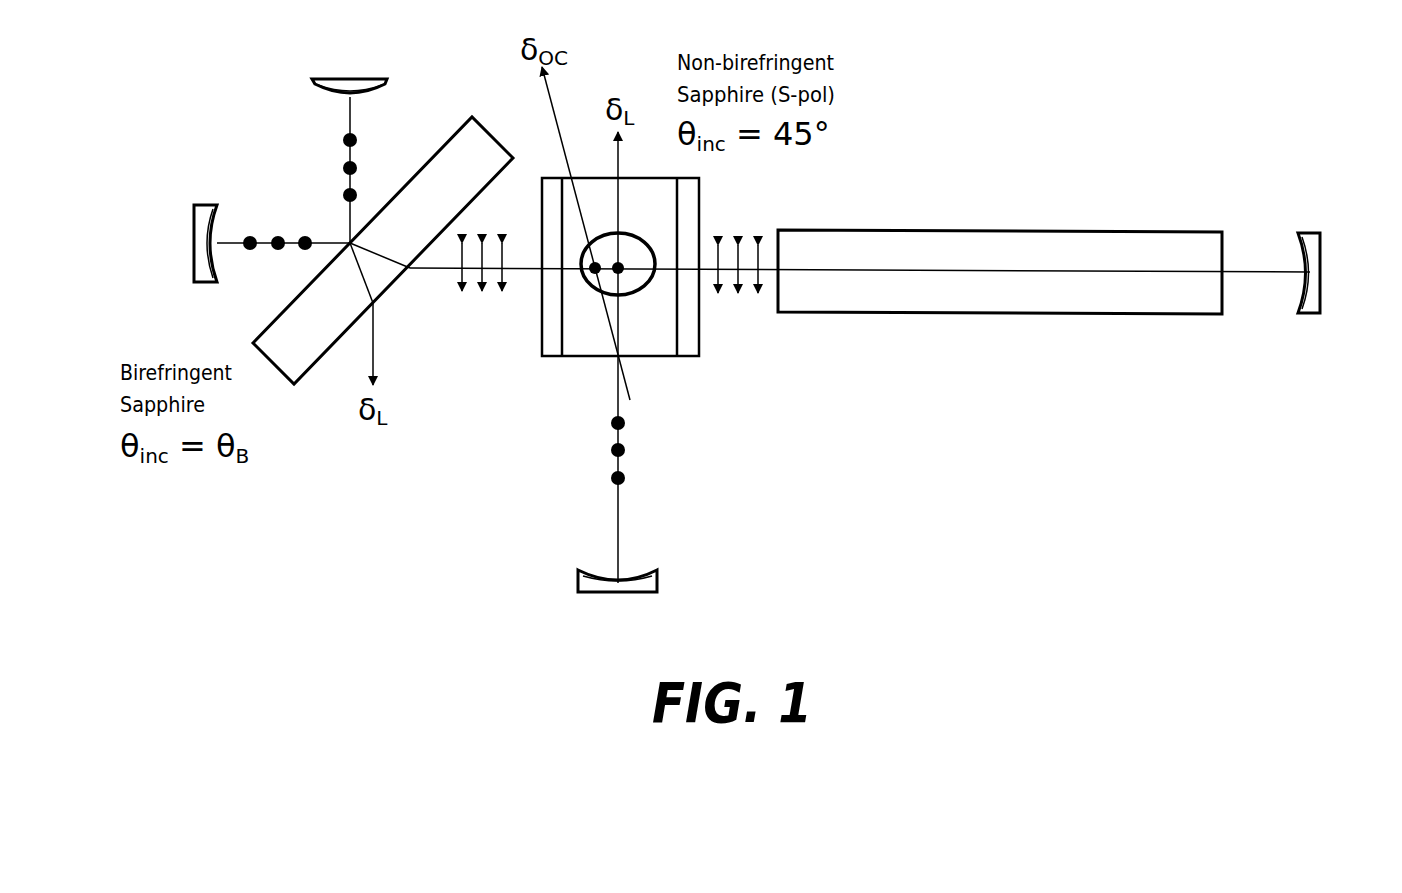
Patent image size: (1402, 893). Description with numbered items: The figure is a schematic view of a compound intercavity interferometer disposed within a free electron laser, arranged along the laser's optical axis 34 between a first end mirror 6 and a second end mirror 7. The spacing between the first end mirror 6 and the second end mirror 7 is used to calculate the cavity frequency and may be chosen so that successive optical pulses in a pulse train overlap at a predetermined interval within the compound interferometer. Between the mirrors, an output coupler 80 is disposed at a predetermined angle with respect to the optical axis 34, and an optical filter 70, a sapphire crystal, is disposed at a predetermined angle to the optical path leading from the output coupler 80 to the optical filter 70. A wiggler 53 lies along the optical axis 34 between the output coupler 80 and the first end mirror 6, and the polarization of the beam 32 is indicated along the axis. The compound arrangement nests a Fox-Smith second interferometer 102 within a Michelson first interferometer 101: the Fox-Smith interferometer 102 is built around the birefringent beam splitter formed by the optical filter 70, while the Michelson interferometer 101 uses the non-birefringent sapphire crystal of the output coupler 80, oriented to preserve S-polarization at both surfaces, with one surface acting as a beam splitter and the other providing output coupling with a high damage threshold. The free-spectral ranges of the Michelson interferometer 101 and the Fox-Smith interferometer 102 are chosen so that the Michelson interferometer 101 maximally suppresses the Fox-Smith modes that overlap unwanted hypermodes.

The second end mirror 7 is at (193, 230).
The second interferometer 102 is at (313, 84).
The optical filter 70 is at (447, 140).
The laser beam polarization 32 is at (437, 270).
The optical axis 34 is at (528, 263).
The output coupler 80 is at (685, 356).
The first interferometer 101 is at (578, 582).
The wiggler 53 is at (1122, 230).
The first end mirror 6 is at (1320, 293).